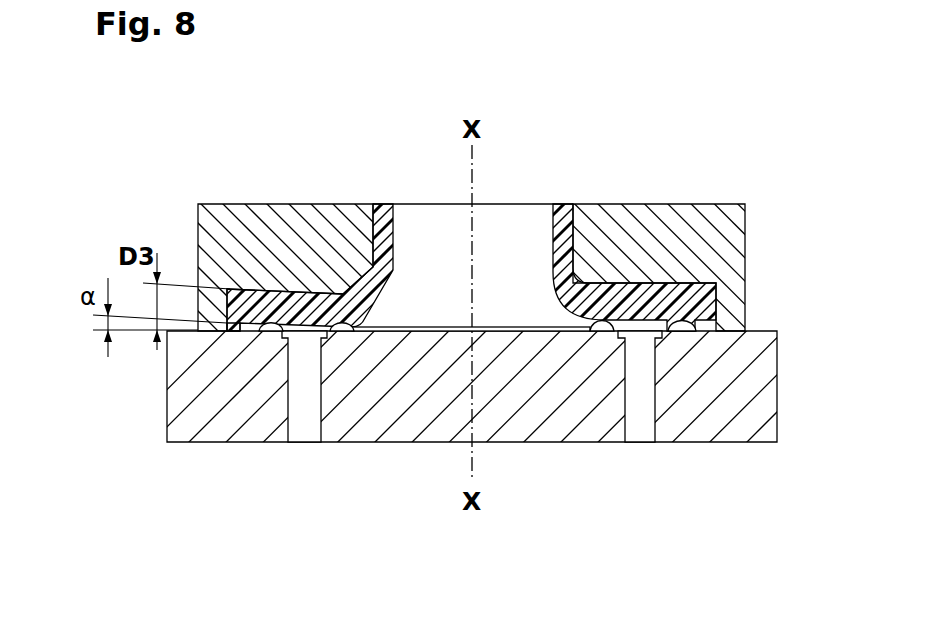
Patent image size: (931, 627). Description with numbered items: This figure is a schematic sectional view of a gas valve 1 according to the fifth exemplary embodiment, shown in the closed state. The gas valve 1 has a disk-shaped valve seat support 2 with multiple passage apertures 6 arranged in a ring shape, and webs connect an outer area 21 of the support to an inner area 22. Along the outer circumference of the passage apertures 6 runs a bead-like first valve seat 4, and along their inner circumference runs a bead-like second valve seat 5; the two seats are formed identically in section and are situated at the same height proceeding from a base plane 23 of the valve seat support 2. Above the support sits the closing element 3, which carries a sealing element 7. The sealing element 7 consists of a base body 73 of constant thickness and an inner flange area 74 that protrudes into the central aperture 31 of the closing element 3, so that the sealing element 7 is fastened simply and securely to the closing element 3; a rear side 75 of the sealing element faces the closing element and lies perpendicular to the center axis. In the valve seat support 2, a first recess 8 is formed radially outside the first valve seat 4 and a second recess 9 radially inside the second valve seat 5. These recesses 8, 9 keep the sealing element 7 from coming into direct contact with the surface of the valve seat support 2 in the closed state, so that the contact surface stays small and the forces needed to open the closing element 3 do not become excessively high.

The gas valve 1 is at (183, 180).
The valve seat support 2 is at (148, 414).
The closing element 3 is at (340, 230).
The first valve seat 4 is at (266, 331).
The second valve seat 5 is at (343, 331).
The passage aperture 6 is at (303, 432).
The sealing element 7 is at (236, 276).
The first recess 8 is at (232, 337).
The second recess 9 is at (525, 331).
The outer area 21 is at (177, 432).
The inner area 22 is at (423, 433).
The base plane 23 is at (417, 318).
The central aperture 31 is at (510, 230).
The base body 73 is at (270, 288).
The inner flange area 74 is at (386, 214).
The rear side 75 is at (315, 290).